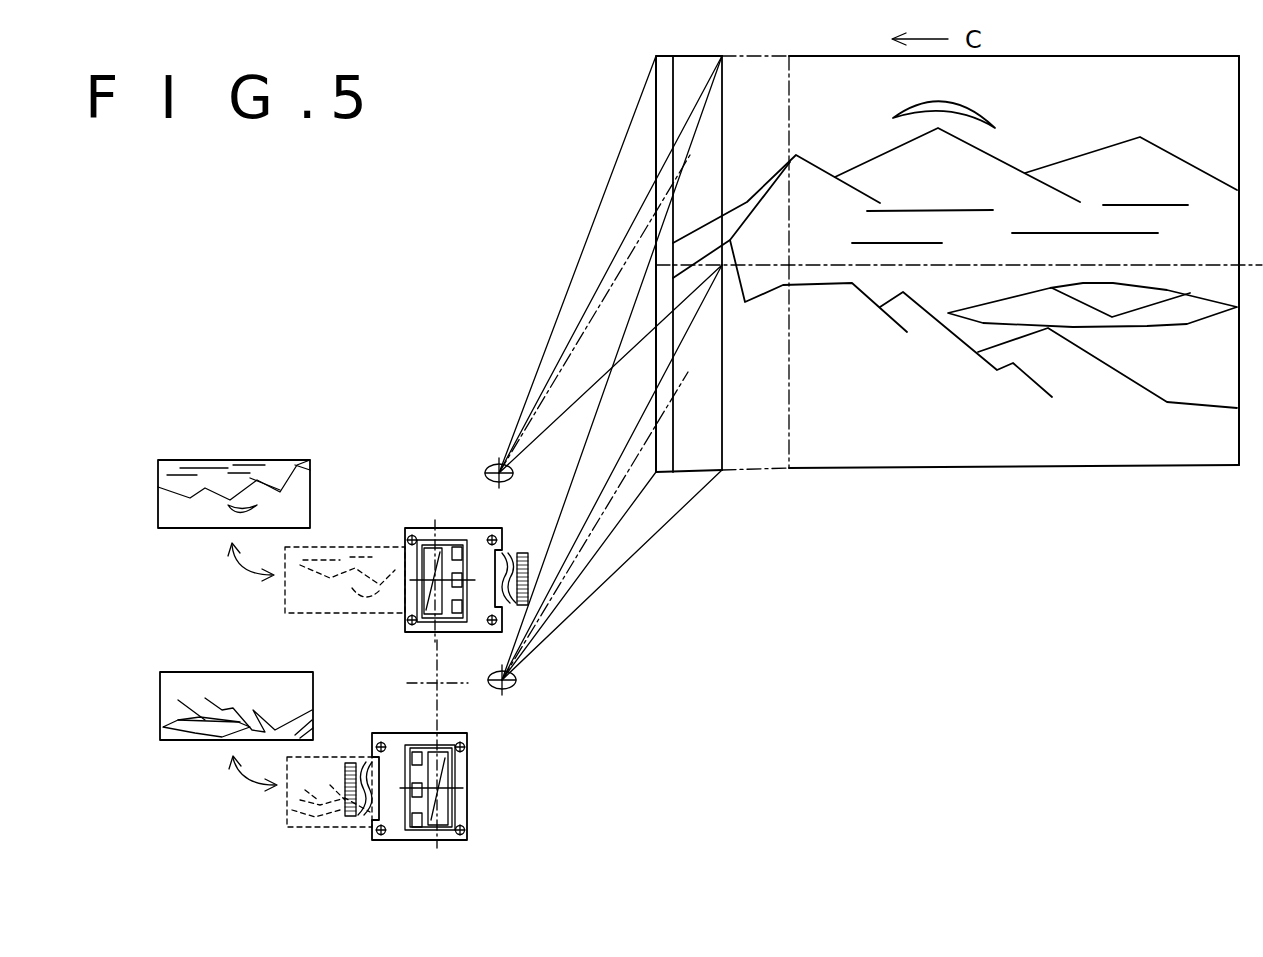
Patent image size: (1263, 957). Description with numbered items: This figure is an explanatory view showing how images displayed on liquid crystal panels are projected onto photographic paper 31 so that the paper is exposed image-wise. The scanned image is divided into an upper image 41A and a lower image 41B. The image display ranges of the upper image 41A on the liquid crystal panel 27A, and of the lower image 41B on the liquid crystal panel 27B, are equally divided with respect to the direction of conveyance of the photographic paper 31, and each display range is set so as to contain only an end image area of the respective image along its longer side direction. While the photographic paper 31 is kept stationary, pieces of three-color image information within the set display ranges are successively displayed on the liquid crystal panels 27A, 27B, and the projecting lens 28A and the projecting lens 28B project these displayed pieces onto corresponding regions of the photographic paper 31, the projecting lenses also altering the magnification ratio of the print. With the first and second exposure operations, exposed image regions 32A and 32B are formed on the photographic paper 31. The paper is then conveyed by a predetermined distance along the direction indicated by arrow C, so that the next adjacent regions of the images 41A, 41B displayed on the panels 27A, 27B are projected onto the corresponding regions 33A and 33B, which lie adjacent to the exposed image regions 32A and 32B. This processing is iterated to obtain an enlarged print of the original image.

The photographic paper 31 is at (1028, 470).
The exposed image region 32A is at (688, 74).
The exposed image region 32B is at (702, 455).
The adjacent region of the photographic paper 33A is at (763, 72).
The adjacent region of the photographic paper 33B is at (770, 455).
The liquid crystal panel 27A is at (428, 530).
The liquid crystal panel 27B is at (428, 843).
The projecting lens 28A is at (496, 463).
The projecting lens 28B is at (514, 689).
The upper image 41A is at (275, 460).
The lower image 41B is at (265, 672).